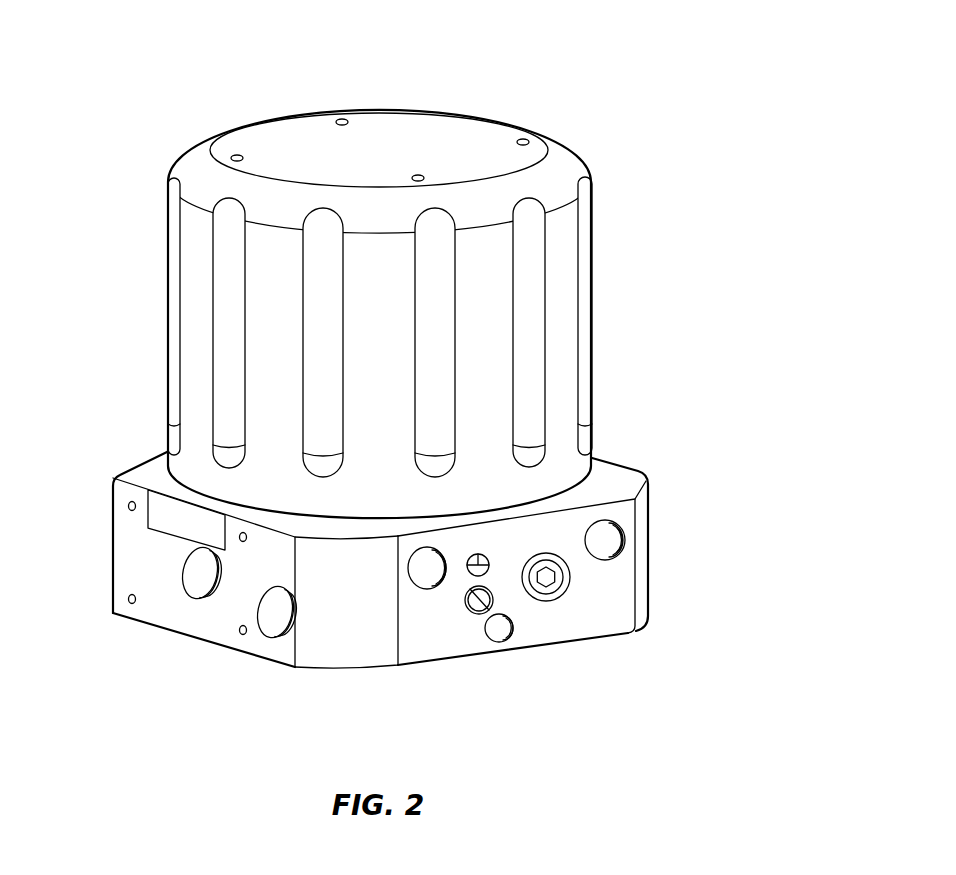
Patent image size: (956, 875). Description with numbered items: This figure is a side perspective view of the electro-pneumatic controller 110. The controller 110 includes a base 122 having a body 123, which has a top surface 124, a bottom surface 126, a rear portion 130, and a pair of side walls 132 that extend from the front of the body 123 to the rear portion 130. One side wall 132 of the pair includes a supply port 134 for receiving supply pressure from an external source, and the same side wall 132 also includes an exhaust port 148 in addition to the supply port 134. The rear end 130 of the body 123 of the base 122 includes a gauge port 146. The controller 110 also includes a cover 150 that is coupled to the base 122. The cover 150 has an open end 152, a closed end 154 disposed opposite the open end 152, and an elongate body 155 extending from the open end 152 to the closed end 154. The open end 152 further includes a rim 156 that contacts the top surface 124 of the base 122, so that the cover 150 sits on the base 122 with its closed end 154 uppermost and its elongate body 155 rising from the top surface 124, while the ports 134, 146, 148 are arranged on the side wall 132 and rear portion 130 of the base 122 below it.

The electro-pneumatic controller 110 is at (398, 375).
The base 122 is at (428, 582).
The body 123 is at (325, 652).
The top surface 124 is at (620, 477).
The bottom surface 126 is at (283, 660).
The rear portion 130 is at (147, 608).
The side wall 132 is at (567, 630).
The supply port 134 is at (433, 587).
The gauge port 146 is at (273, 612).
The exhaust port 148 is at (625, 556).
The cover 150 is at (360, 291).
The open end 152 is at (188, 472).
The closed end 154 is at (305, 137).
The elongate body 155 is at (198, 330).
The rim 156 is at (340, 518).